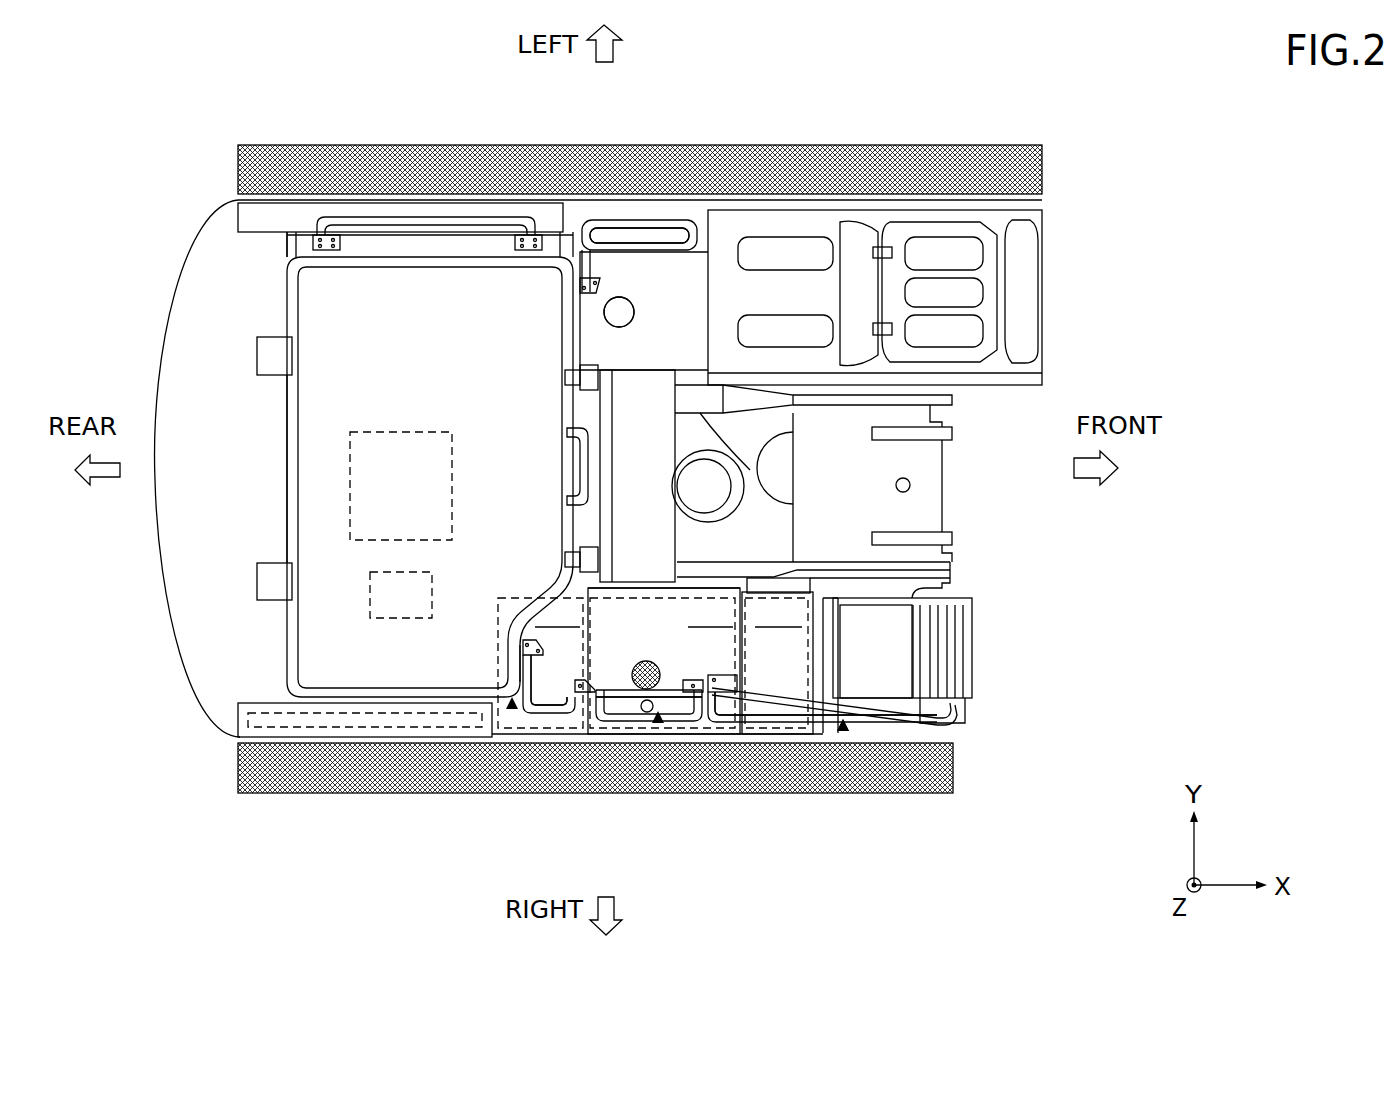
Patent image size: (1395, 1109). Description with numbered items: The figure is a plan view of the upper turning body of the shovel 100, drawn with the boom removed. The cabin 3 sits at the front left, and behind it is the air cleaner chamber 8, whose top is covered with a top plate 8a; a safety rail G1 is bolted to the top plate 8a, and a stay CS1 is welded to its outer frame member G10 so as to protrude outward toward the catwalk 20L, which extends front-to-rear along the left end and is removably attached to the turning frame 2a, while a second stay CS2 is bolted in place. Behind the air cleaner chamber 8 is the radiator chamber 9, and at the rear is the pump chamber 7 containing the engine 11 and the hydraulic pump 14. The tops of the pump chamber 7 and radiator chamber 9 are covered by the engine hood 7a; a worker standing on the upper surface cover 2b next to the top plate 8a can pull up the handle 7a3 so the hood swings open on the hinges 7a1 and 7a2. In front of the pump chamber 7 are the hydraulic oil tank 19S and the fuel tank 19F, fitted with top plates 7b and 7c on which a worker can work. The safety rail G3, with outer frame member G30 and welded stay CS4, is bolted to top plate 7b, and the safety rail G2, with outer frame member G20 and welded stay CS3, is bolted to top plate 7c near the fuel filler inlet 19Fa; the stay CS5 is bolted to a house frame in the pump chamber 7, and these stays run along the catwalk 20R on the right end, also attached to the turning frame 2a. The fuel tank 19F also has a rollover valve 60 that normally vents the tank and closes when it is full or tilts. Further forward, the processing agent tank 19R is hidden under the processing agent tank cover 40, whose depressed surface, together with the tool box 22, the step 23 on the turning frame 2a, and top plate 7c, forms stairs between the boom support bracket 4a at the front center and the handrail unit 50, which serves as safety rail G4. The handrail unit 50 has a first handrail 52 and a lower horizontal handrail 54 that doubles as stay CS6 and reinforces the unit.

The shovel 100 is at (122, 108).
The radiator chamber 9 is at (390, 325).
The stay CS2 is at (430, 218).
The stay CS1 is at (585, 220).
The outer frame member G10 is at (636, 236).
The safety rail G1 is at (659, 212).
The top plate 8a is at (680, 312).
The air cleaner chamber 8 is at (619, 312).
The catwalk 20L is at (1040, 168).
The catwalk 20R is at (950, 768).
The cabin 3 is at (1027, 282).
The pump chamber 7 is at (340, 572).
The engine hood 7a is at (335, 493).
The hinge 7a1 is at (267, 352).
The hinge 7a2 is at (267, 578).
The handle 7a3 is at (587, 467).
The top plate 7b is at (557, 672).
The top plate 7c is at (680, 653).
The engine 11 is at (398, 430).
The hydraulic pump 14 is at (400, 624).
The upper surface cover 2b is at (643, 410).
The boom support bracket 4a is at (912, 440).
The processing agent tank cover 40 is at (788, 592).
The tool box 22 is at (882, 622).
The step 23 is at (952, 670).
The hydraulic oil tank 19S is at (540, 663).
The fuel tank 19F is at (664, 661).
The processing agent tank 19R is at (777, 663).
The fuel filler inlet 19Fa is at (645, 660).
The outer frame member G30 is at (543, 698).
The stay CS4 is at (563, 720).
The safety rail G3 is at (512, 710).
The stay CS5 is at (367, 723).
The stay CS3 is at (603, 717).
The outer frame member G20 is at (638, 697).
The rollover valve 60 is at (647, 712).
The safety rail G2 is at (659, 723).
The handrail 52 is at (820, 707).
The stay CS6 is at (770, 717).
The handrail 54 is at (826, 703).
The turning frame 2a is at (953, 712).
The safety rail G4 is at (843, 731).
The handrail unit 50 is at (843, 725).